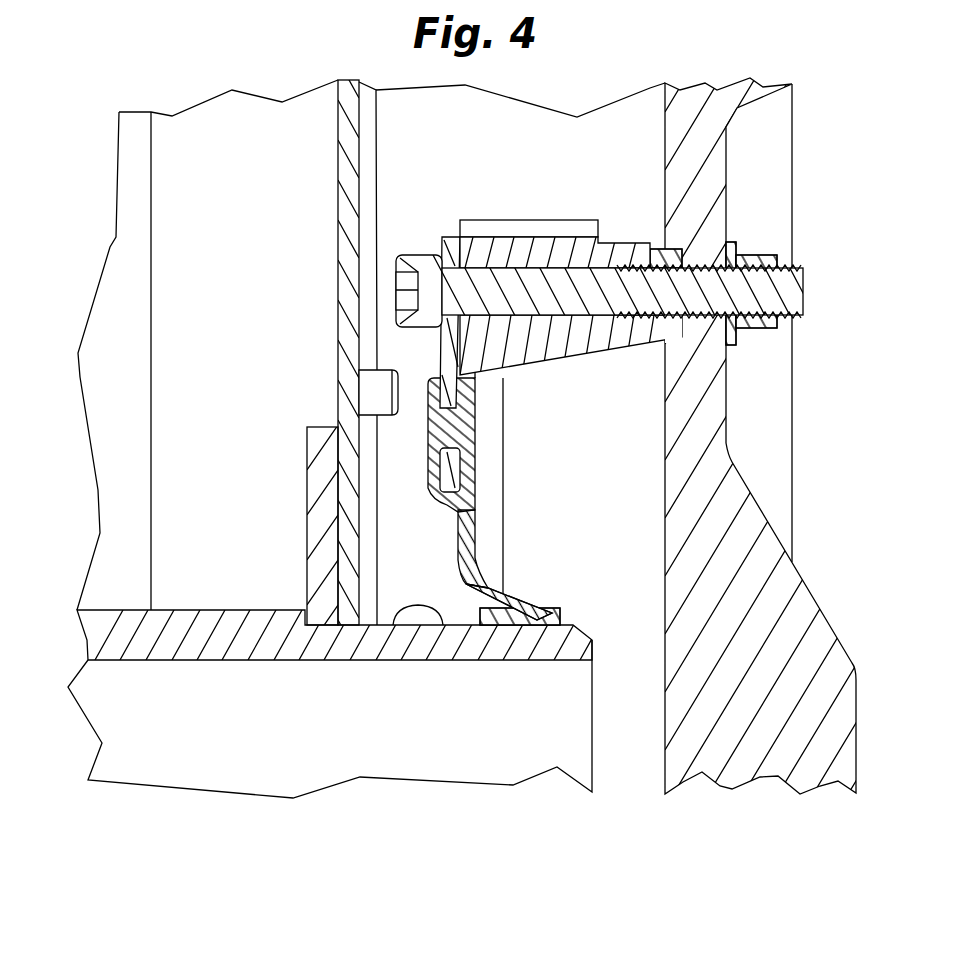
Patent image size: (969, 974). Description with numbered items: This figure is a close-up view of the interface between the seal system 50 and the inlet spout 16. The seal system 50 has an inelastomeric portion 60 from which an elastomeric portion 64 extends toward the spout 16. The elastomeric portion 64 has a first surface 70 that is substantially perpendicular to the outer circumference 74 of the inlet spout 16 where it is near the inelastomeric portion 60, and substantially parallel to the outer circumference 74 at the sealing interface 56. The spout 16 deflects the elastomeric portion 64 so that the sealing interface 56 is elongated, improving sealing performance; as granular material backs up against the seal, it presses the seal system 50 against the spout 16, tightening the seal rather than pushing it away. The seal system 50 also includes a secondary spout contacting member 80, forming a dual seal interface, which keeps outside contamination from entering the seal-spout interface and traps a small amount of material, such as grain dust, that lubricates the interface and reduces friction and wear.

The inlet spout 16 is at (193, 608).
The seal system 50 is at (465, 505).
The sealing interface 56 is at (535, 625).
The inelastomeric portion 60 is at (443, 347).
The elastomeric portion 64 is at (512, 602).
The first surface 70 is at (472, 536).
The outer circumference 74 is at (400, 627).
The secondary spout contacting member 80 is at (463, 626).